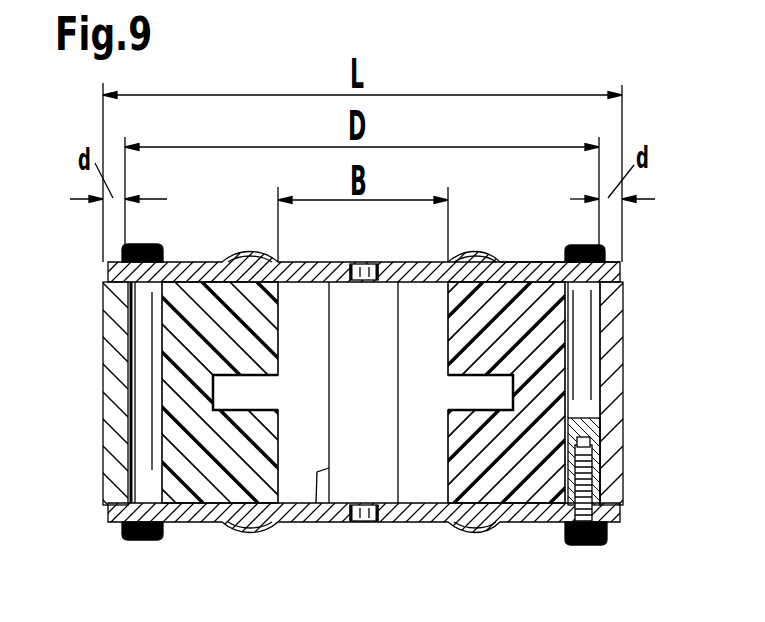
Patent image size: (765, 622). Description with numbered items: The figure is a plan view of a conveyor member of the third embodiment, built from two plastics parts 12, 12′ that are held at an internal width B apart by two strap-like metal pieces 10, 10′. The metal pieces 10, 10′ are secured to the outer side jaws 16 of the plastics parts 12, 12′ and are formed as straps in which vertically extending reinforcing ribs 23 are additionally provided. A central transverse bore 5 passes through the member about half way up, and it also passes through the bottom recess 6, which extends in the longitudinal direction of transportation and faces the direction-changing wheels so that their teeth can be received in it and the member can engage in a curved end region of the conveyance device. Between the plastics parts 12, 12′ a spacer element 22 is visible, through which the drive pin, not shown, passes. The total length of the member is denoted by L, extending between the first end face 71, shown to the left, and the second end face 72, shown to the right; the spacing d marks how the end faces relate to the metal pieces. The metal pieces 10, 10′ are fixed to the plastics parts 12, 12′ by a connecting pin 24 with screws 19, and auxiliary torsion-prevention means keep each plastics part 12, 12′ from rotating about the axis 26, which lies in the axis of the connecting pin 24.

The outer side jaw 16 is at (210, 262).
The strap-like metal piece 10′ is at (522, 262).
The strap-like metal piece 10 is at (410, 512).
The reinforcing rib 23 is at (258, 522).
The bore 5 is at (375, 523).
The first end face 71 is at (103, 355).
The second end face 72 is at (625, 368).
The plastics part 12′ is at (205, 490).
The plastics part 12 is at (512, 485).
The bottom recess 6 is at (245, 378).
The spacer element 22 is at (316, 498).
The connecting pin 24 is at (133, 460).
The axis 26 is at (587, 332).
The screw 19 is at (598, 250).